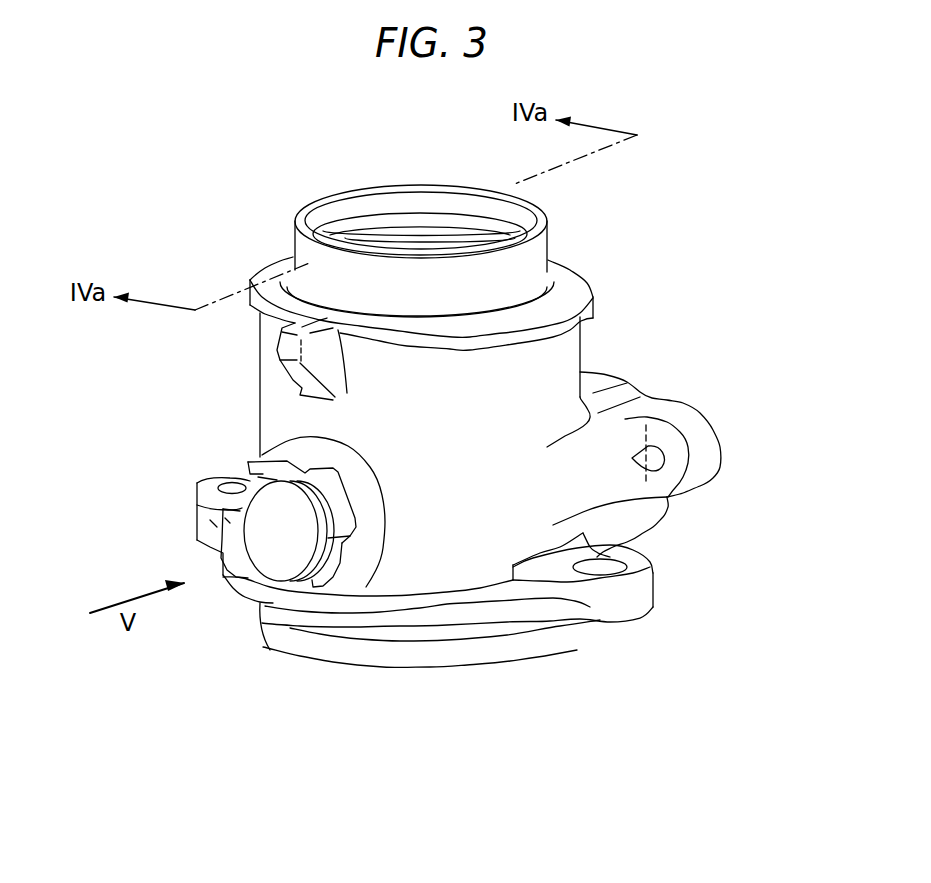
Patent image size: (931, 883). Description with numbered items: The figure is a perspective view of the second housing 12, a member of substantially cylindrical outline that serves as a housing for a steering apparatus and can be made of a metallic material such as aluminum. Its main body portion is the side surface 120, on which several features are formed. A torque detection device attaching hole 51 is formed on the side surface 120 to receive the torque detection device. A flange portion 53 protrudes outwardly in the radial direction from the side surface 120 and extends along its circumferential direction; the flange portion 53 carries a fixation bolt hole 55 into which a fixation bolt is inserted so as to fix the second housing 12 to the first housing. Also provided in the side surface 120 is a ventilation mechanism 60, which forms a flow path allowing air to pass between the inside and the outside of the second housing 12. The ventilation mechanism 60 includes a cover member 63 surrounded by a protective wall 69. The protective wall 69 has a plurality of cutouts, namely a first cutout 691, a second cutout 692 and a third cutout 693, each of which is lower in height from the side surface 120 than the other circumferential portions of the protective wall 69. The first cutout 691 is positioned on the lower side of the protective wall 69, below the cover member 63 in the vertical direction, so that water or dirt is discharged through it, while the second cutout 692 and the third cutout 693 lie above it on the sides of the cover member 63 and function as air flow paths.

The second housing 12 is at (268, 196).
The side surface 120 is at (557, 356).
The torque detection device attaching hole 51 is at (633, 392).
The fixation bolt hole 55 is at (608, 568).
The flange portion 53 is at (470, 611).
The protective wall 69 is at (343, 576).
The cover member 63 is at (262, 550).
The ventilation mechanism 60 is at (290, 600).
The first cutout 691 is at (262, 605).
The second cutout 692 is at (222, 510).
The third cutout 693 is at (348, 513).